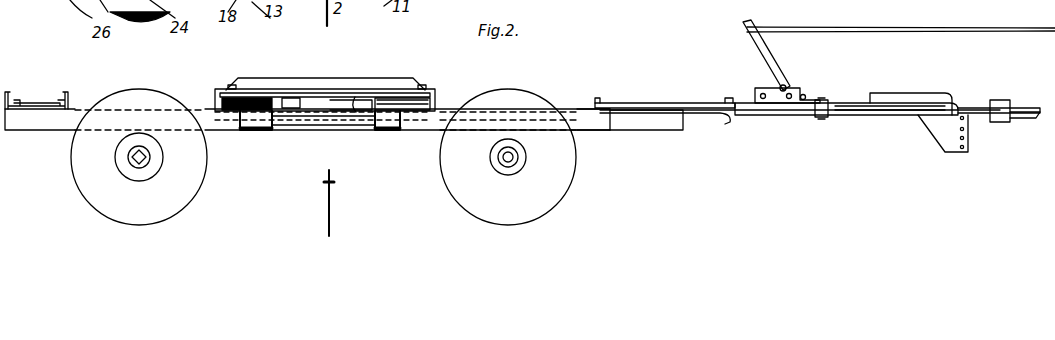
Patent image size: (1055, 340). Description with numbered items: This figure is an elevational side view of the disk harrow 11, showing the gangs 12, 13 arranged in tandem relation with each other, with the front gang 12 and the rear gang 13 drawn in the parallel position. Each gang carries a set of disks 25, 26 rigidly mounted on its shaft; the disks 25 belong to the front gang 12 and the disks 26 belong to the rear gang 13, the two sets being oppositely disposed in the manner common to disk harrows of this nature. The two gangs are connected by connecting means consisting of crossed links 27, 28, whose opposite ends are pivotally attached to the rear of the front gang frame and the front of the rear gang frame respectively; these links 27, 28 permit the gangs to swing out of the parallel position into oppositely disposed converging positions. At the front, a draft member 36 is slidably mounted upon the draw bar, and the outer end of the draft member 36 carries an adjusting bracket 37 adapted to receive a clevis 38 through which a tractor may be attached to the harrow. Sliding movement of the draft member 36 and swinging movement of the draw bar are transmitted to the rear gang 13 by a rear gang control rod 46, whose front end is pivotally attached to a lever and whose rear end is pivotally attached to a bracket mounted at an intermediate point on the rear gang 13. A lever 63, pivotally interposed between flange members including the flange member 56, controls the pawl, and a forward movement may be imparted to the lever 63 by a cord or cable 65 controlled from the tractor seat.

The disk harrow 11 is at (320, 203).
The gang 12 is at (592, 133).
The gang 13 is at (47, 132).
The disks 25 is at (510, 216).
The disks 26 is at (145, 222).
The connecting link 27 is at (322, 95).
The connecting link 28 is at (352, 108).
The draft member 36 is at (908, 90).
The adjusting bracket 37 is at (980, 113).
The clevis 38 is at (1017, 108).
The rear gang control rod 46 is at (318, 124).
The flange member 56 is at (874, 100).
The lever 63 is at (771, 63).
The cord or cable 65 is at (901, 18).